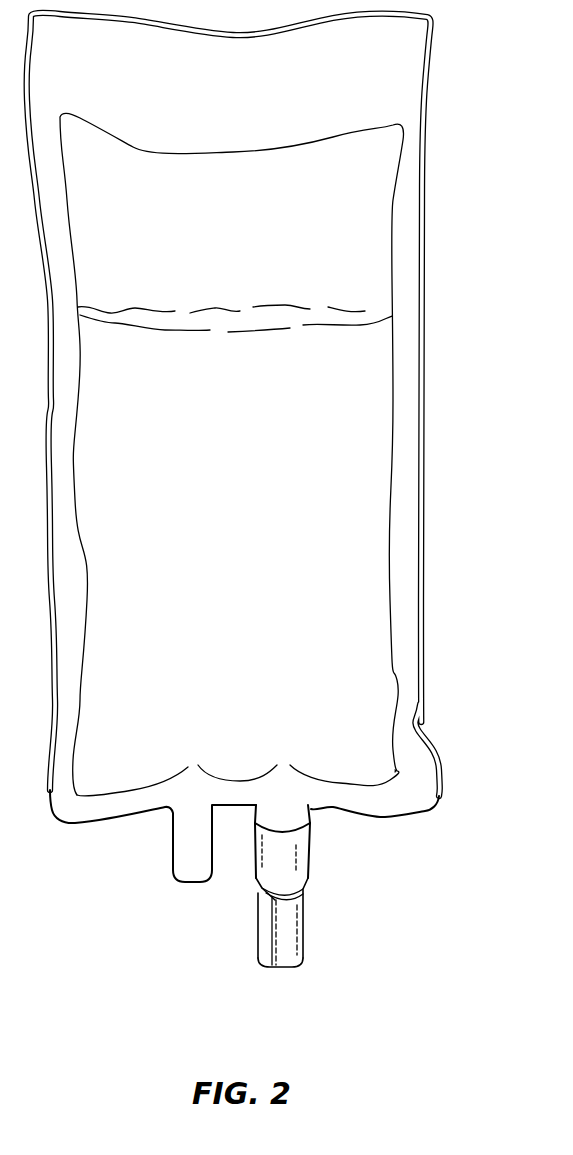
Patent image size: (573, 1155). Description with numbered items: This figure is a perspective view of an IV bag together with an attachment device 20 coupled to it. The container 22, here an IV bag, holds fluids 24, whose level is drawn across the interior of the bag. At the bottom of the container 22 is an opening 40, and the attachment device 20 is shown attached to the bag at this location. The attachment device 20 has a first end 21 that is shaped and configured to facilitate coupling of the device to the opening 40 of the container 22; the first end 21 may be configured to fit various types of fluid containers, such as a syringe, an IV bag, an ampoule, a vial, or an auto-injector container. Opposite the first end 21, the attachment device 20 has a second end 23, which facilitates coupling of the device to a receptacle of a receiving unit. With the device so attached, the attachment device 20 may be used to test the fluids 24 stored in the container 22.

The container 22 is at (398, 67).
The fluids 24 is at (362, 310).
The opening 40 is at (282, 808).
The first end 21 is at (257, 860).
The attachment device 20 is at (265, 932).
The second end 23 is at (300, 963).